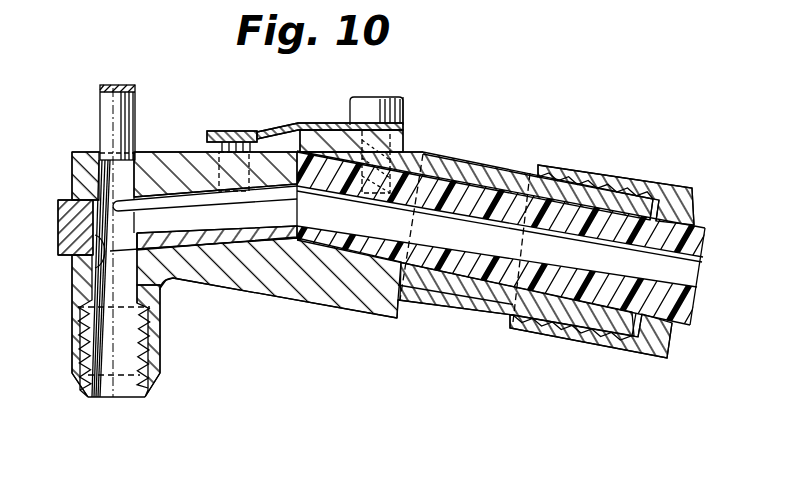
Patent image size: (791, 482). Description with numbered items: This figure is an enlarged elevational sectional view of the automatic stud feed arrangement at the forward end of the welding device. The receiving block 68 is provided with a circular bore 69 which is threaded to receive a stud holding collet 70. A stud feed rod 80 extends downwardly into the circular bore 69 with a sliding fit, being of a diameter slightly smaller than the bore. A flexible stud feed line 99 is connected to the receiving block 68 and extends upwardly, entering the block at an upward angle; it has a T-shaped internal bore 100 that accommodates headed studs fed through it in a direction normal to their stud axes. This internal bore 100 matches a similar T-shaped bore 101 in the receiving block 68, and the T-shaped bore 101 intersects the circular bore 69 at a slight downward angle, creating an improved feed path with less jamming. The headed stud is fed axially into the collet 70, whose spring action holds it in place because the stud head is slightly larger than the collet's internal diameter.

The receiving block 68 is at (333, 309).
The circular bore 69 is at (110, 251).
The stud holding collet 70 is at (150, 385).
The stud feed rod 80 is at (122, 85).
The stud feed line 99 is at (703, 228).
The internal bore 100 is at (497, 228).
The T-shaped bore 101 is at (305, 144).